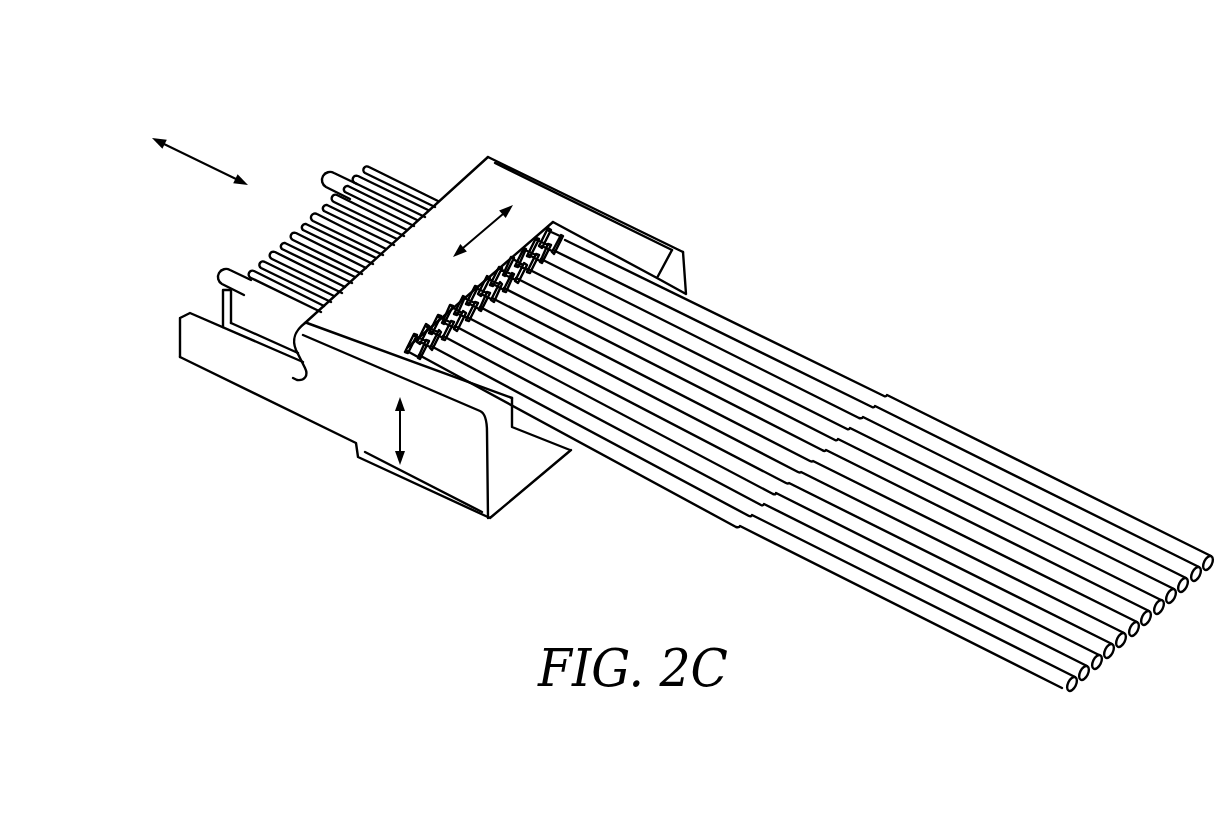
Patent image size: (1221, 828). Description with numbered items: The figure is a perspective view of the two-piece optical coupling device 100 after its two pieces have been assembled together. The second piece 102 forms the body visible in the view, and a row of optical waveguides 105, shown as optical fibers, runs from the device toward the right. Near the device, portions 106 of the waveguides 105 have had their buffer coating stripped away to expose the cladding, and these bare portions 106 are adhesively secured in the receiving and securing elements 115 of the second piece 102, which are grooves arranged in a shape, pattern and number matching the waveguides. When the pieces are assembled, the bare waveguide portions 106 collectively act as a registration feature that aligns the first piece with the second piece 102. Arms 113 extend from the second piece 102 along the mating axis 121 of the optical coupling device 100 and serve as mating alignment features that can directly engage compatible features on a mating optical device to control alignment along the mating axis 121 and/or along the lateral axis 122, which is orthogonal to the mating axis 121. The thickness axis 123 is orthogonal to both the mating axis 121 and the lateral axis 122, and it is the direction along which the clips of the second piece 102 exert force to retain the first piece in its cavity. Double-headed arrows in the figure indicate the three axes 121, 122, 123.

The optical coupling device 100 is at (268, 76).
The second piece 102 is at (513, 187).
The optical waveguides 105 is at (757, 336).
The portions of the waveguides 106 is at (553, 218).
The arms 113 is at (320, 398).
The receiving and securing elements 115 is at (467, 297).
The mating axis 121 is at (188, 153).
The lateral axis 122 is at (482, 232).
The thickness axis 123 is at (405, 428).